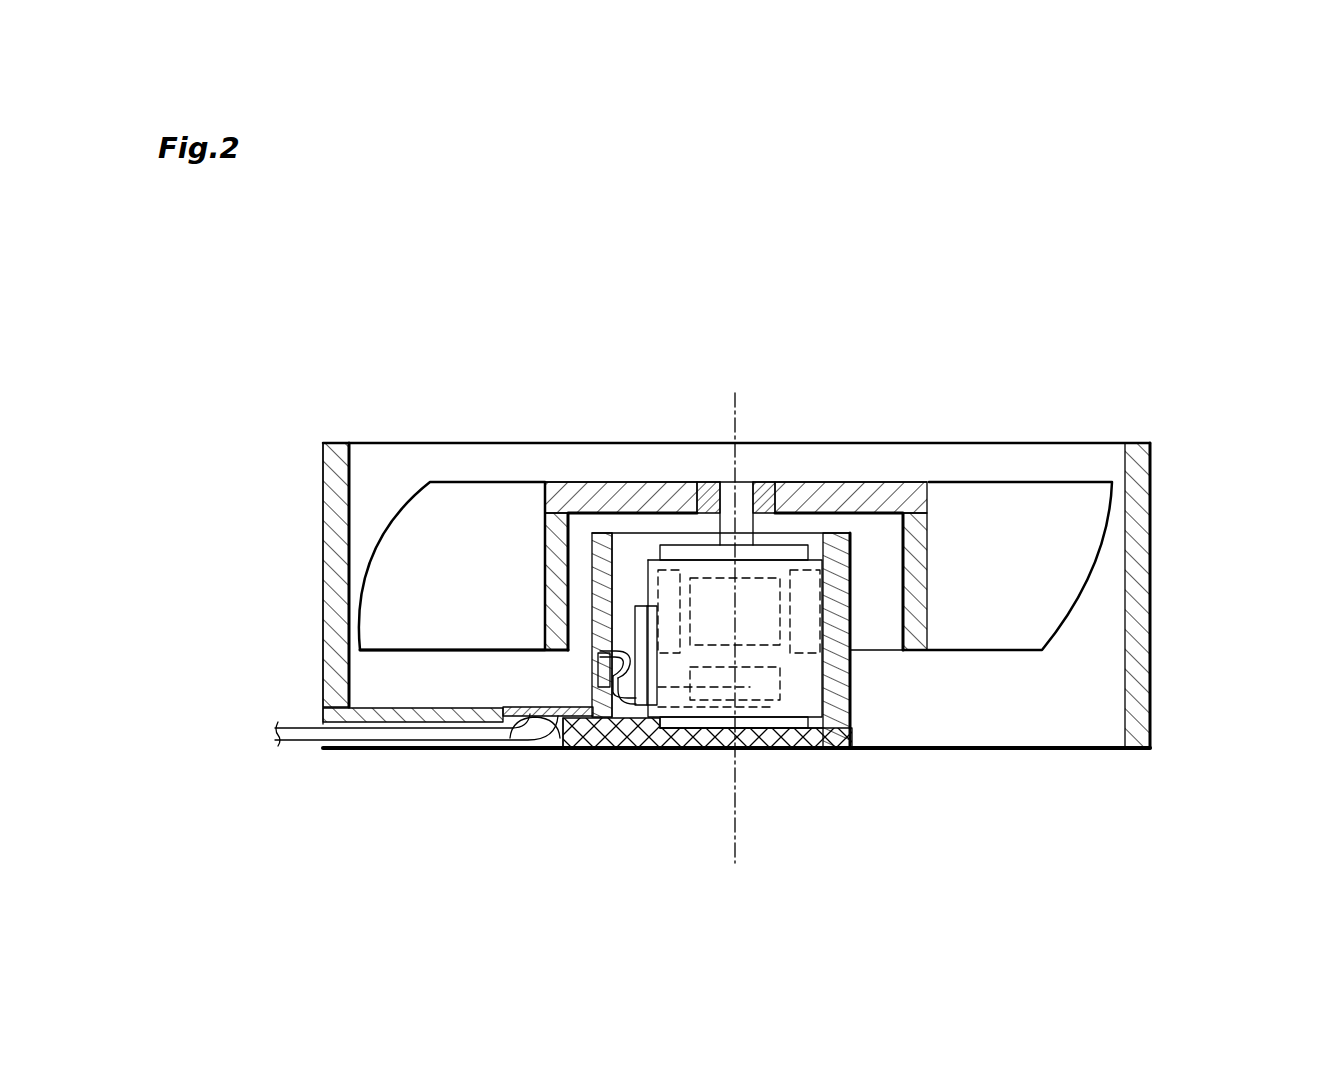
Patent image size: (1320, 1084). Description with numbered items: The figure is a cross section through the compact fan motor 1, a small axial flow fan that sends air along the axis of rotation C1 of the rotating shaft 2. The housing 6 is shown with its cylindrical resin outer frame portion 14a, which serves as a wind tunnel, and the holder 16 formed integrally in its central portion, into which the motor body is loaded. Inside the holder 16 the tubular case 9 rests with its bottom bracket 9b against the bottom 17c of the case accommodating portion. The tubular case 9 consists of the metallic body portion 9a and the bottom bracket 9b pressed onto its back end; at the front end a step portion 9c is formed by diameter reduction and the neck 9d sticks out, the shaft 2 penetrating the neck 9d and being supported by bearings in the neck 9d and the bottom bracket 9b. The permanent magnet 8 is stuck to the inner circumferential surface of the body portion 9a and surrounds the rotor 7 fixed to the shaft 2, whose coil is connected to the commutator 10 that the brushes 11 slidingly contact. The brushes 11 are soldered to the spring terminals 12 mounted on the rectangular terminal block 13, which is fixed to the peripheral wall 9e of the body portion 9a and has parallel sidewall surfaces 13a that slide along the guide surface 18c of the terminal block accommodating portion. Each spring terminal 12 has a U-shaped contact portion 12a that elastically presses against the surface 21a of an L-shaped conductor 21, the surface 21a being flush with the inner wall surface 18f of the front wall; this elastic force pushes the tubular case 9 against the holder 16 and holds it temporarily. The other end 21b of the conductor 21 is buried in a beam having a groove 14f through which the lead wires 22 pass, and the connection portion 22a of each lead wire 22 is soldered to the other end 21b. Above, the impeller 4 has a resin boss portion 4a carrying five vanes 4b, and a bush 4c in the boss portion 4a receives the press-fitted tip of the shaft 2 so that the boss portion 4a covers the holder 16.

The compact fan motor 1 is at (1107, 365).
The rotating shaft 2 is at (745, 508).
The impeller 4 is at (1066, 476).
The boss portion 4a is at (840, 482).
The vanes 4b is at (420, 500).
The bush 4c is at (704, 482).
The housing 6 is at (316, 460).
The rotor 7 is at (703, 593).
The permanent magnet 8 is at (837, 633).
The tubular case 9 is at (830, 602).
The body portion 9a is at (845, 752).
The bottom bracket 9b is at (703, 750).
The step portion 9c is at (811, 548).
The neck 9d is at (640, 585).
The peripheral wall 9e is at (620, 590).
The commutator 10 is at (777, 750).
The brushes 11 is at (658, 752).
The spring terminals 12 is at (628, 601).
The contact portion 12a is at (600, 657).
The terminal block 13 is at (563, 750).
The sidewall surfaces 13a is at (607, 750).
The outer frame portion 14a is at (1138, 537).
The groove 14f is at (385, 748).
The holder 16 is at (864, 586).
The bottom 17c is at (812, 750).
The guide surface 18c is at (620, 600).
The inner wall surface 18f is at (628, 597).
The conductors 21 is at (590, 697).
The surface 21a is at (627, 633).
The other end 21b is at (633, 686).
The lead wires 22 is at (282, 742).
The connection portion 22a is at (535, 742).
The axis of rotation C1 is at (738, 418).